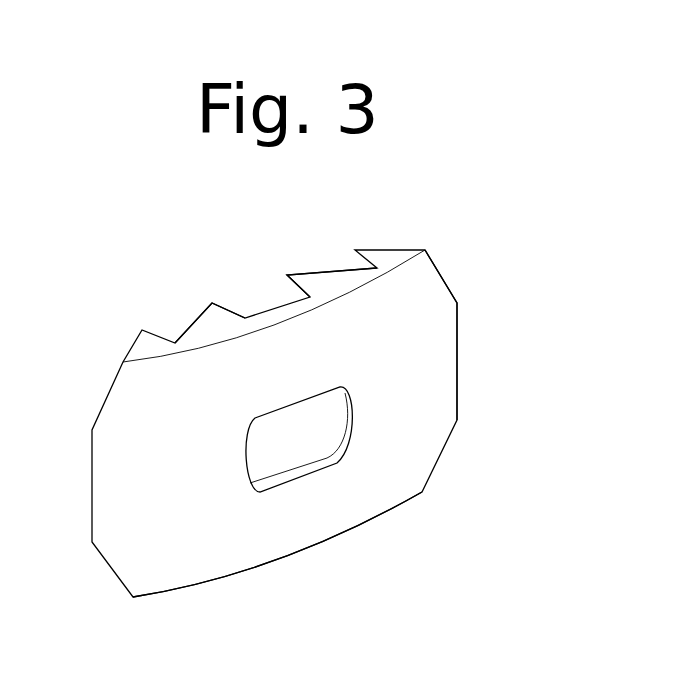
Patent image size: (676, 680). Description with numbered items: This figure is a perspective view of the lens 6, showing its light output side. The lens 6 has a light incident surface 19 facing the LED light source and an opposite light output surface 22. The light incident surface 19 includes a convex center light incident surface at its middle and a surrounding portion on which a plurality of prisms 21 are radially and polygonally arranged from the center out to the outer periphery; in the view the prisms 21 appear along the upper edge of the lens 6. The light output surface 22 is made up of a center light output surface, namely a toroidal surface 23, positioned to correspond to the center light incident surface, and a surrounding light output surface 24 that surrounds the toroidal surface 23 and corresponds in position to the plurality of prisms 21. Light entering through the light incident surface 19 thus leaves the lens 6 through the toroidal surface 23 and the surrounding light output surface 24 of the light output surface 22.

The light incident surface 19 is at (160, 247).
The lens 6 is at (407, 220).
The prisms 21 is at (215, 317).
The light output surface 22 is at (365, 573).
The toroidal surface 23 is at (272, 457).
The surrounding light output surface 24 is at (417, 307).